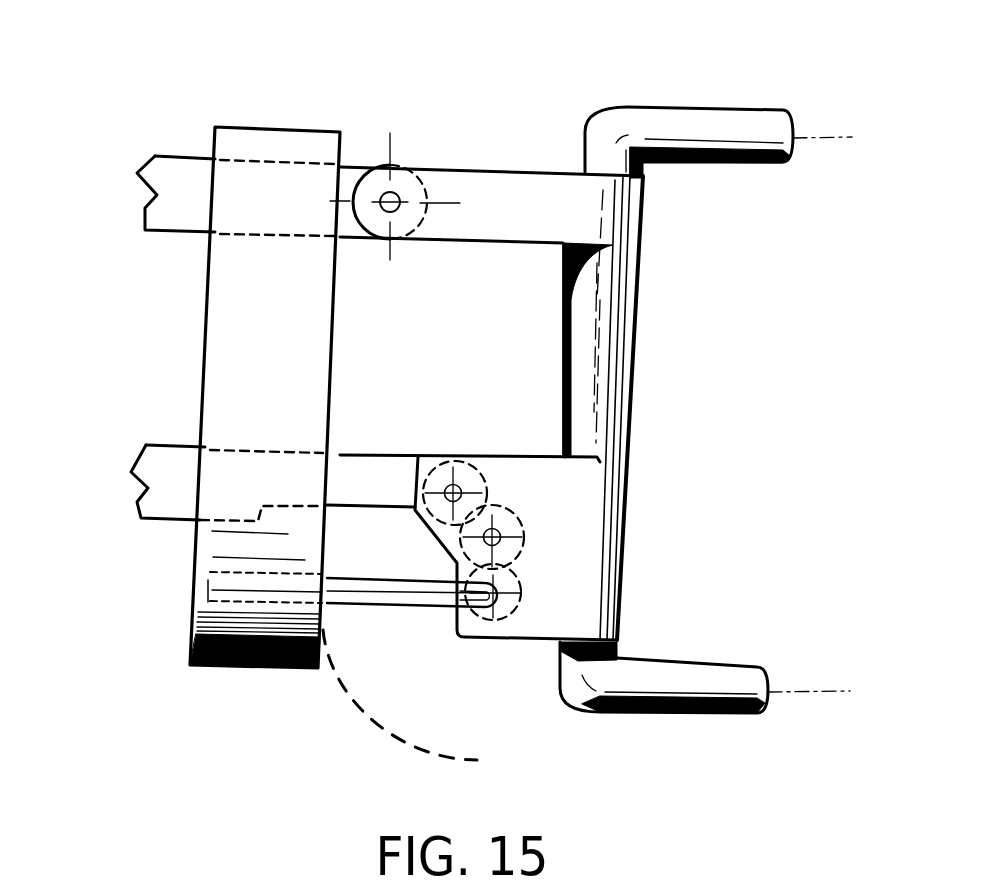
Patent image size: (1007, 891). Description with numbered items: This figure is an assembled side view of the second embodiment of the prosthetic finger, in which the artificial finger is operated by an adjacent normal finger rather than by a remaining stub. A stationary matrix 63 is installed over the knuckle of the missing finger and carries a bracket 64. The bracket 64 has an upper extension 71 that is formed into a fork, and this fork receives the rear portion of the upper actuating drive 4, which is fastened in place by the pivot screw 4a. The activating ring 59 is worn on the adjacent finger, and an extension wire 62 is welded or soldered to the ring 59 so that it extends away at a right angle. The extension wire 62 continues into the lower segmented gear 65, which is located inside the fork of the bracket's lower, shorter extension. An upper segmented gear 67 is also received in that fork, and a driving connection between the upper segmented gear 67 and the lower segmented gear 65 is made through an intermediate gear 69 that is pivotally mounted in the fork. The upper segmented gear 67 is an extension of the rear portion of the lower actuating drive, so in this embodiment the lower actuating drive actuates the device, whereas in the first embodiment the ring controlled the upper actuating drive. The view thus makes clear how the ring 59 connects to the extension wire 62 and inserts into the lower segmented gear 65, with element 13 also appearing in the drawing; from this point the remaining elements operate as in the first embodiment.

The upper actuating drive 4 is at (185, 183).
The pivot screw 4a is at (397, 197).
The activating ring 59 is at (288, 145).
The upper extension 71 is at (483, 207).
The bracket 64 is at (613, 342).
The stationary matrix 63 is at (685, 678).
The lower arm 13 is at (375, 478).
The upper segmented gear 67 is at (468, 476).
The intermediate gear 69 is at (510, 530).
The lower segmented gear 65 is at (513, 615).
The extension wire 62 is at (393, 593).